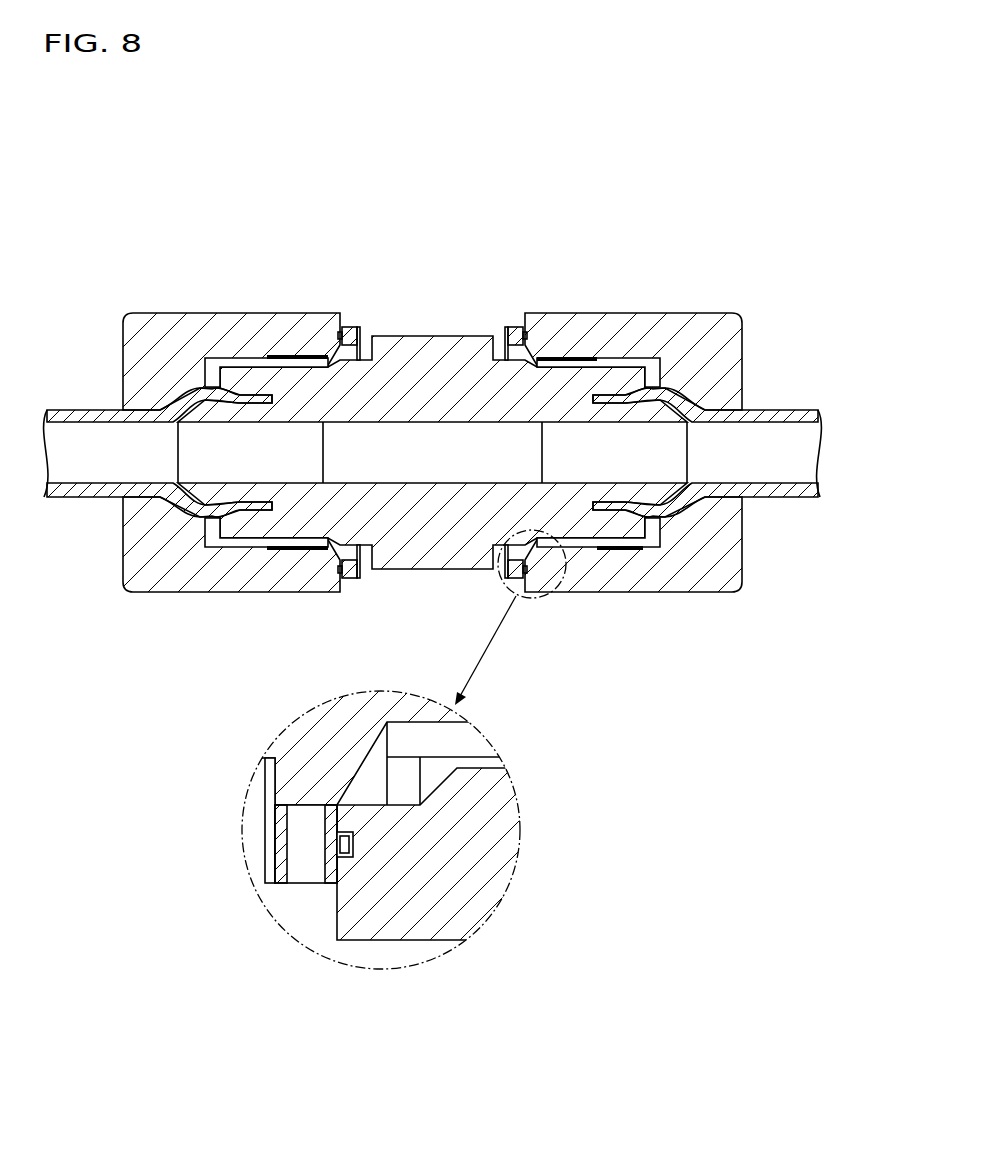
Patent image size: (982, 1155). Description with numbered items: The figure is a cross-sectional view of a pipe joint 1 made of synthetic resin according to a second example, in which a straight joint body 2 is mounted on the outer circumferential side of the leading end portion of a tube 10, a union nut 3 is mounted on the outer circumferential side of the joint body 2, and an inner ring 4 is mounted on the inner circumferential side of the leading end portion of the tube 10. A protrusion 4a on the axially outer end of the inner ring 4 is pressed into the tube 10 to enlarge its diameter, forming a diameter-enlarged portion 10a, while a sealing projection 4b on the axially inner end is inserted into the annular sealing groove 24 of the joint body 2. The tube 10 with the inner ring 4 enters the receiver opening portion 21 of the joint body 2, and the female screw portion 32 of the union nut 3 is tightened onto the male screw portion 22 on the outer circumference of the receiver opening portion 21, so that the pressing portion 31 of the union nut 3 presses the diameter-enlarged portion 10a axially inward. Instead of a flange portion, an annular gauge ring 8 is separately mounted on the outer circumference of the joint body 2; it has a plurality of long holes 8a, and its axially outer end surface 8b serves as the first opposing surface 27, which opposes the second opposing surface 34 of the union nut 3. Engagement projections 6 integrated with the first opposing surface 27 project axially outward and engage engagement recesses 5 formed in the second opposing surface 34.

The pipe joint 1 is at (157, 256).
The joint body 2 is at (432, 532).
The union nut 3 is at (438, 626).
The inner ring 4 is at (501, 456).
The protrusion 4a is at (727, 520).
The sealing projection 4b is at (540, 397).
The engagement recess 5 is at (323, 843).
The engagement projection 6 is at (354, 843).
The gauge ring 8 is at (353, 328).
The long hole 8a is at (290, 860).
The end surface 8b is at (380, 935).
The first opposing surface 27 is at (340, 858).
The tube 10 is at (445, 380).
The diameter-enlarged portion 10a is at (665, 387).
The receiver opening portion 21 is at (637, 382).
The male screw portion 22 is at (623, 550).
The annular sealing groove 24 is at (533, 500).
The pressing portion 31 is at (727, 375).
The female screw portion 32 is at (613, 360).
The second opposing surface 34 is at (518, 348).